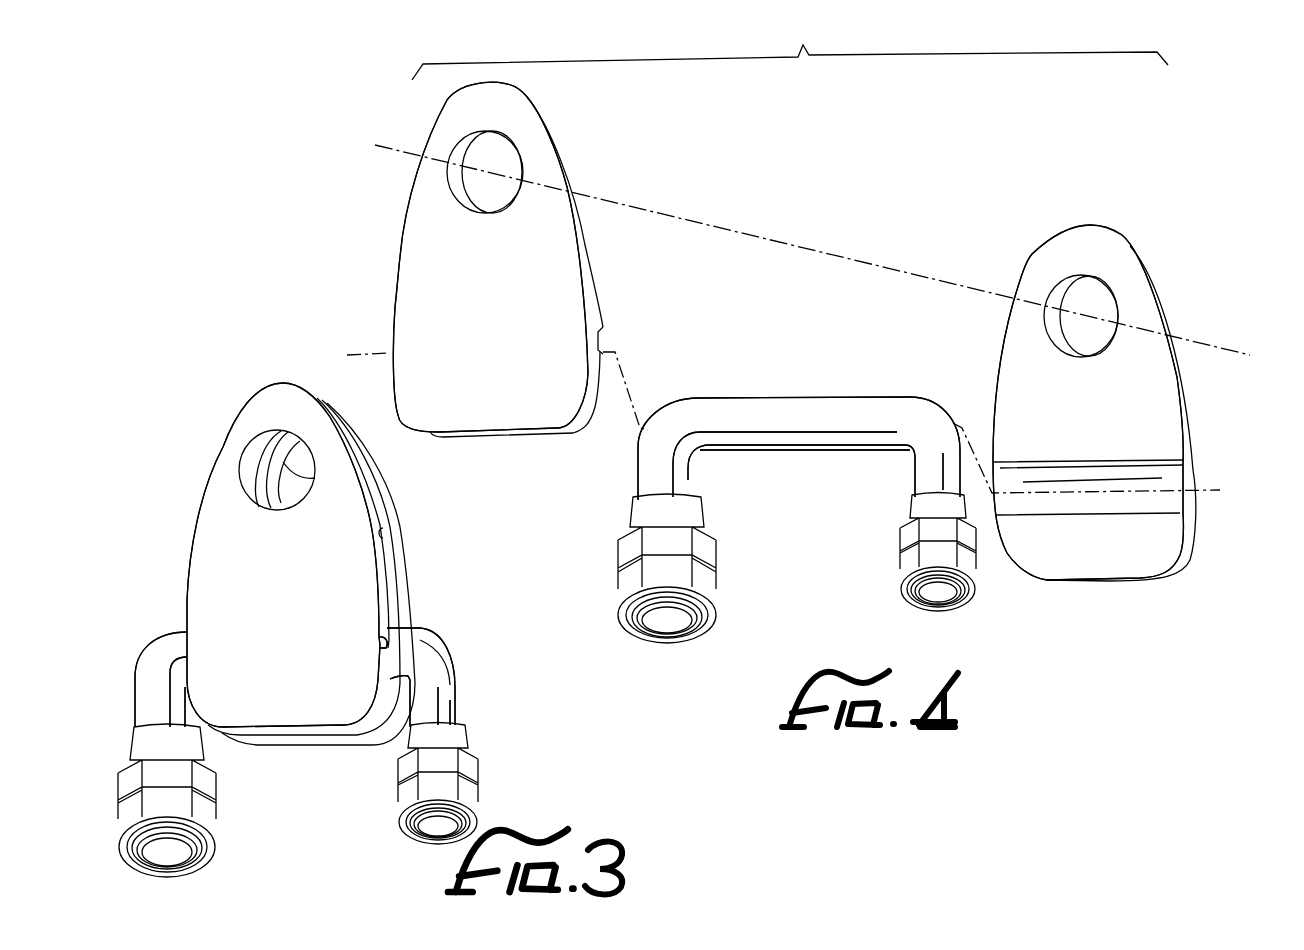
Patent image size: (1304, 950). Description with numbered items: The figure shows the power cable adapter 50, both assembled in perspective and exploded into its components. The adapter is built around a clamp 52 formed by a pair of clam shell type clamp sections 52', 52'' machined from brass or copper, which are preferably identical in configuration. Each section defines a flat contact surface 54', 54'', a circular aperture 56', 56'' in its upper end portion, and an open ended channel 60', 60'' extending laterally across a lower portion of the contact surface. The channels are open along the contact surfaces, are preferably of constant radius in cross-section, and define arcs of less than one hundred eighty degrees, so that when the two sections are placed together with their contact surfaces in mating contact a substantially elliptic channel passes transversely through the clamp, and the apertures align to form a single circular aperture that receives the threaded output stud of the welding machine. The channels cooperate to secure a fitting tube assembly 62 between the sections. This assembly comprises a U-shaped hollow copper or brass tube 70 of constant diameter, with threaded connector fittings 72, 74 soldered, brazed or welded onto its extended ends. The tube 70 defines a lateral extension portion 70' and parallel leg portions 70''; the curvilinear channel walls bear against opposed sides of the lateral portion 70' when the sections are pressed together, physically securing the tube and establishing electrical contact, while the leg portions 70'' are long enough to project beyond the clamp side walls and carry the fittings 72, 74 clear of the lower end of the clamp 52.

In FIG. 3, the cable adapter 50 is at (225, 385).
In FIG. 4, the clamp 52 is at (788, 330).
In FIG. 3, the clamp section 52' is at (267, 555).
In FIG. 4, the clamp section 52' is at (474, 257).
In FIG. 3, the clamp section 52'' is at (345, 574).
In FIG. 4, the clamp section 52'' is at (1129, 402).
In FIG. 3, the contact surface 54' is at (396, 519).
In FIG. 4, the contact surface 54' is at (549, 267).
In FIG. 3, the contact surface 54'' is at (350, 567).
In FIG. 4, the contact surface 54'' is at (1066, 413).
In FIG. 3, the circular aperture 56' is at (249, 456).
In FIG. 4, the circular aperture 56' is at (447, 172).
In FIG. 3, the circular aperture 56'' is at (361, 467).
In FIG. 4, the circular aperture 56'' is at (1039, 295).
In FIG. 3, the open ended channel 60' is at (357, 614).
In FIG. 4, the open ended channel 60' is at (635, 334).
In FIG. 4, the open ended channel 60'' is at (1132, 500).
In FIG. 3, the fitting tube assembly 62 is at (160, 640).
In FIG. 4, the fitting tube assembly 62 is at (704, 392).
In FIG. 4, the tube 70 is at (804, 394).
In FIG. 4, the lateral extension portion 70' is at (799, 404).
In FIG. 3, the parallel leg portions 70'' is at (308, 677).
In FIG. 4, the parallel leg portions 70'' is at (799, 481).
In FIG. 3, the threaded connector fitting 72 is at (120, 783).
In FIG. 4, the threaded connector fitting 72 is at (622, 549).
In FIG. 3, the threaded connector fitting 74 is at (468, 767).
In FIG. 4, the threaded connector fitting 74 is at (976, 567).